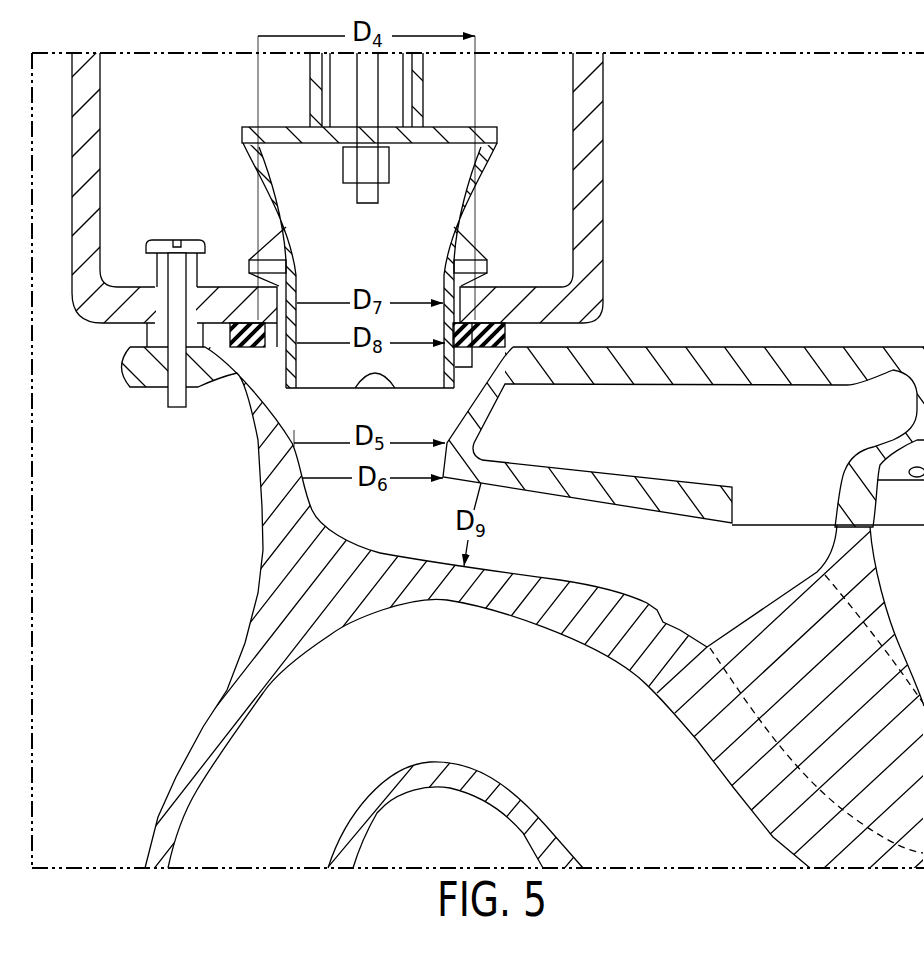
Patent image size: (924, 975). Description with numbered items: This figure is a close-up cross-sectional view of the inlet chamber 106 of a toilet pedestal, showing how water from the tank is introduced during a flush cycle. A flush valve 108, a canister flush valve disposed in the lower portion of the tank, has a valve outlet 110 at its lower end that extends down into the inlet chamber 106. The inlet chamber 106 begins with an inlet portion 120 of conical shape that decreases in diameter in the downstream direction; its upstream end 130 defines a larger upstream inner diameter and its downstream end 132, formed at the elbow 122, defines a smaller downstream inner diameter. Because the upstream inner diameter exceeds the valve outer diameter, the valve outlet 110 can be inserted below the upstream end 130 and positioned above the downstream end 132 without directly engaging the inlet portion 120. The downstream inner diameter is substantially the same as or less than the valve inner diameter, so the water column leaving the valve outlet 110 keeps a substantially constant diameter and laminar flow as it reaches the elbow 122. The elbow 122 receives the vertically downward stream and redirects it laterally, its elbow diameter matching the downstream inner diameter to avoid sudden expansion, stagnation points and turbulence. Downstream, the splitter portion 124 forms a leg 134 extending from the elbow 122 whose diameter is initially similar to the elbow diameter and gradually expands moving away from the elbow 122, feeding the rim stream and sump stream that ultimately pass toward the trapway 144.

The inlet chamber 106 is at (486, 572).
The flush valve 108 is at (421, 190).
The valve outlet 110 is at (446, 362).
The inlet portion 120 is at (310, 412).
The elbow 122 is at (290, 573).
The splitter portion 124 is at (747, 553).
The upstream end 130 is at (458, 332).
The downstream end 132 is at (327, 531).
The leg 134 is at (558, 563).
The trapway 144 is at (327, 758).